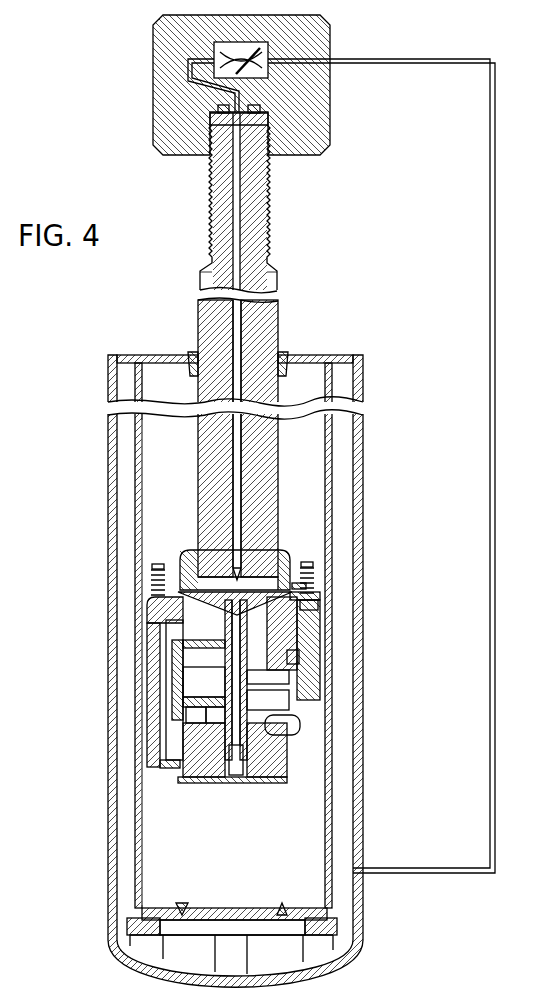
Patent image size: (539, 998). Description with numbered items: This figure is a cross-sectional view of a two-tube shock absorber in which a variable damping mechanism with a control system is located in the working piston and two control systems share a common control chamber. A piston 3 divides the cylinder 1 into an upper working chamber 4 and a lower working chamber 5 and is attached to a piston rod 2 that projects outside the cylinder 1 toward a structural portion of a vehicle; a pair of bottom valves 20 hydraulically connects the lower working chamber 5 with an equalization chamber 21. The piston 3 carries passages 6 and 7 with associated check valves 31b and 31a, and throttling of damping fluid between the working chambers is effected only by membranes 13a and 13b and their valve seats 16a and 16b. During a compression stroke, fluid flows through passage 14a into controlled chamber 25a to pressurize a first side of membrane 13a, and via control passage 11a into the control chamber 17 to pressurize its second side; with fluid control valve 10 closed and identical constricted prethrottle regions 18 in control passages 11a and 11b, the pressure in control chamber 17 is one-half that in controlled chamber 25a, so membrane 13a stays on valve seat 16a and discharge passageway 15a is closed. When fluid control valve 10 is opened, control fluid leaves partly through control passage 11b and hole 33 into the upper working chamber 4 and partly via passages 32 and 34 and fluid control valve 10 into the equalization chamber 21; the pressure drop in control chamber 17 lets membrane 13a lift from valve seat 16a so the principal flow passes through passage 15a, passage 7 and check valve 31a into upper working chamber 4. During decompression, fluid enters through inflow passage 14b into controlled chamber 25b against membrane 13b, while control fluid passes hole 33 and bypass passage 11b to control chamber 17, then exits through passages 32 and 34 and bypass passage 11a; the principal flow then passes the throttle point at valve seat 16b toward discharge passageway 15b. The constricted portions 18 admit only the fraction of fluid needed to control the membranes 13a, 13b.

The cylinder 1 is at (330, 855).
The piston rod 2 is at (200, 440).
The piston 3 is at (183, 618).
The upper working chamber 4 is at (148, 384).
The lower working chamber 5 is at (148, 849).
The passage 6 is at (165, 676).
The passage 7 is at (300, 630).
The fluid control valve 10 is at (168, 104).
The control passage 11a is at (180, 705).
The control passage 11b is at (183, 596).
The membrane 13a is at (287, 700).
The membrane 13b is at (287, 677).
The passage 14a is at (195, 735).
The inflow passage 14b is at (317, 603).
The discharge passageway 15a is at (200, 745).
The discharge passageway 15b is at (195, 640).
The valve seat 16a is at (185, 700).
The valve seat 16b is at (297, 657).
The control chamber 17 is at (165, 662).
The constricted portion 18 is at (303, 587).
The bottom valves 20 is at (282, 905).
The equalization chamber 21 is at (340, 812).
The controlled chamber 25a is at (190, 728).
The controlled chamber 25b is at (287, 643).
The check valve 31a is at (300, 592).
The check valve 31b is at (190, 757).
The passage 32 is at (165, 632).
The hole 33 is at (293, 563).
The passage 34 is at (238, 478).